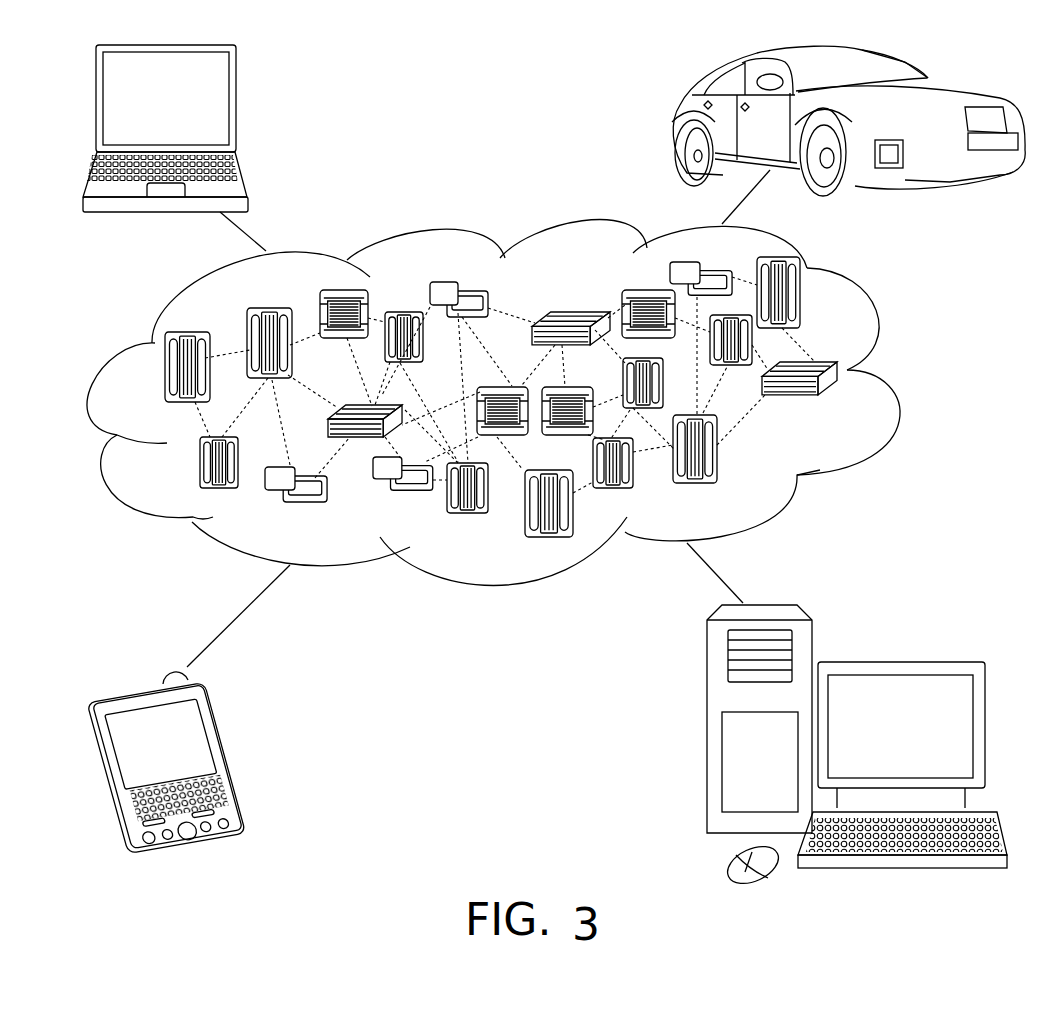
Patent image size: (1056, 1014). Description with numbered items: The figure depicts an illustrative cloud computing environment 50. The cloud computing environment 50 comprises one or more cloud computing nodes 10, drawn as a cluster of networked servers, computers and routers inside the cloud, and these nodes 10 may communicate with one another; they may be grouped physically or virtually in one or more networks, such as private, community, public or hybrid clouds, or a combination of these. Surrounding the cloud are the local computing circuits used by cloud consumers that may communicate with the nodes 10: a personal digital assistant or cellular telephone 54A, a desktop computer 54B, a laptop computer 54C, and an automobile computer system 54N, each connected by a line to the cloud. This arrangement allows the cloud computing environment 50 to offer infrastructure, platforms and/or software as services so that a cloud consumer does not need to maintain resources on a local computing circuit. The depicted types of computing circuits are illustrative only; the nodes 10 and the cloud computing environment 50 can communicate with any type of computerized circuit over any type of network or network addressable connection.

The cloud computing node 10 is at (850, 411).
The cloud computing environment 50 is at (898, 378).
The personal digital assistant or cellular telephone 54A is at (223, 757).
The desktop computer 54B is at (897, 662).
The laptop computer 54C is at (237, 107).
The automobile computer system 54N is at (680, 122).